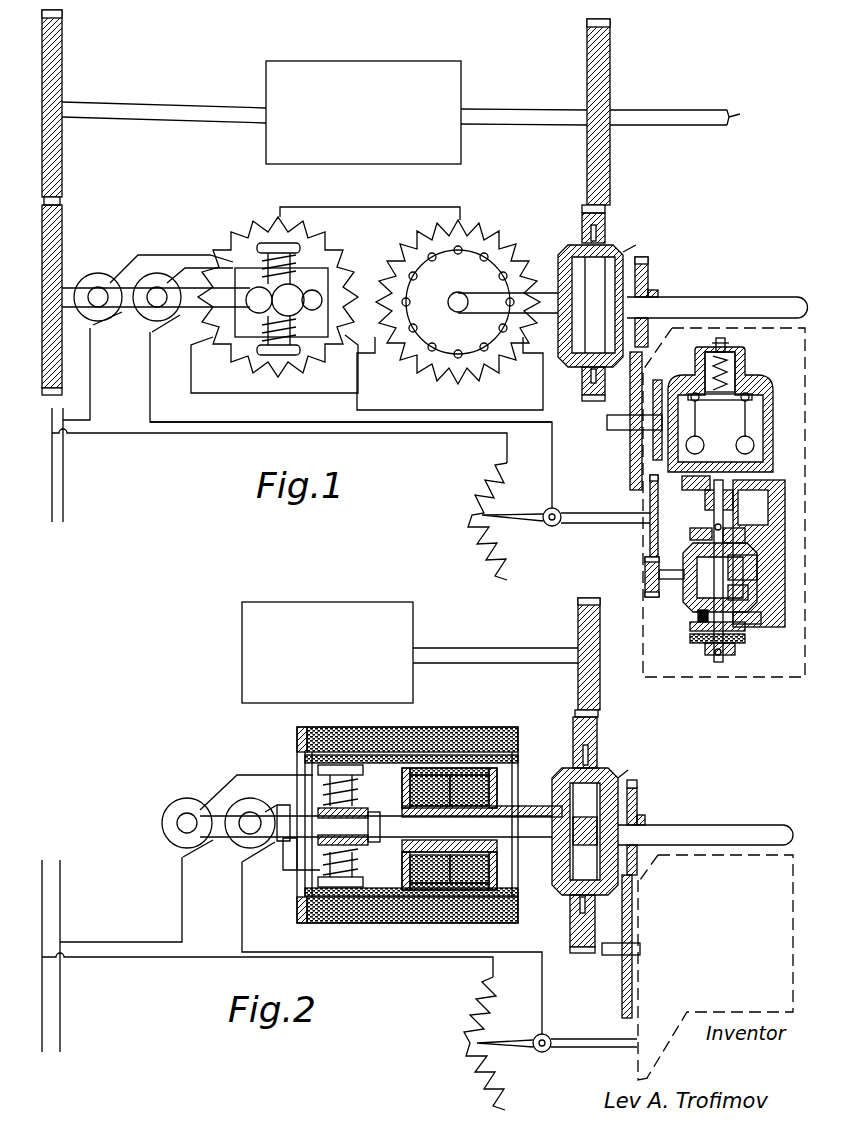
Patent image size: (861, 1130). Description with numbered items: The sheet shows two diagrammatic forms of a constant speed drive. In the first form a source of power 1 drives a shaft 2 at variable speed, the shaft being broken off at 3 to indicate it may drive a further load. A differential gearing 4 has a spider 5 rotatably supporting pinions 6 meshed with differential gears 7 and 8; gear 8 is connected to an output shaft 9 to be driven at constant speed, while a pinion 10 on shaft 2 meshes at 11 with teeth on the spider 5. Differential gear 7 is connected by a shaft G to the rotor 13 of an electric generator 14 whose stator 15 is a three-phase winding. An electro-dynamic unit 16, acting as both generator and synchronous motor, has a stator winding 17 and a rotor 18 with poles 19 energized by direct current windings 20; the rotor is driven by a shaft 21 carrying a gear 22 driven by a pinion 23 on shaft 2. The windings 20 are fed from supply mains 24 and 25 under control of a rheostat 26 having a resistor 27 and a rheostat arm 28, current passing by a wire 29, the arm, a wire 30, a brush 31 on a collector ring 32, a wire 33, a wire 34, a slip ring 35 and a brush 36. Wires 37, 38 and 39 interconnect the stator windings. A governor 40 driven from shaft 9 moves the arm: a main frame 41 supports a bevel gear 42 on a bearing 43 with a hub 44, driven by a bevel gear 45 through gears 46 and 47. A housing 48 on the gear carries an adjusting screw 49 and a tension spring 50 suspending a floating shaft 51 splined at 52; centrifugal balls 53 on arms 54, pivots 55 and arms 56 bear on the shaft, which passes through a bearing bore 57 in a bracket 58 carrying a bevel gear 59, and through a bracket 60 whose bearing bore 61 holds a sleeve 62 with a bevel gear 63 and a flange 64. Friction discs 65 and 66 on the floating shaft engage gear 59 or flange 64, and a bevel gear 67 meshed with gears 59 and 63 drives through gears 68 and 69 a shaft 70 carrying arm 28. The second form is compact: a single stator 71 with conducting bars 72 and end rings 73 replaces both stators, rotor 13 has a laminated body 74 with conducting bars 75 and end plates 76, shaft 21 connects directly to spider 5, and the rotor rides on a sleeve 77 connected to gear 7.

In FIG. 1, the source of power 1 is at (383, 61).
In FIG. 2, the source of power 1 is at (285, 602).
In FIG. 1, the shaft 2 is at (172, 104).
In FIG. 2, the shaft 2 is at (498, 655).
In FIG. 1, the broken-off shaft end 3 is at (741, 109).
In FIG. 1, the differential gearing 4 is at (643, 230).
In FIG. 1, the spider 5 is at (605, 220).
In FIG. 2, the spider 5 is at (597, 725).
In FIG. 1, the pinions 6 is at (595, 305).
In FIG. 2, the pinions 6 is at (597, 813).
In FIG. 1, the differential gear 7 is at (558, 262).
In FIG. 2, the differential gear 7 is at (553, 775).
In FIG. 1, the differential gear 8 is at (635, 243).
In FIG. 2, the differential gear 8 is at (629, 767).
In FIG. 1, the output shaft 9 is at (714, 297).
In FIG. 2, the output shaft 9 is at (712, 825).
In FIG. 1, the pinion 10 is at (610, 163).
In FIG. 2, the pinion 10 is at (600, 676).
In FIG. 1, the mesh 11 is at (582, 210).
In FIG. 1, the rotor 13 is at (500, 282).
In FIG. 2, the rotor 13 is at (497, 795).
In FIG. 1, the electric generator 14 is at (498, 236).
In FIG. 1, the stator 15 is at (497, 364).
In FIG. 1, the electro-dynamic unit 16 is at (262, 216).
In FIG. 1, the stator winding 17 is at (326, 352).
In FIG. 1, the rotor 18 is at (297, 300).
In FIG. 2, the rotor 18 is at (322, 812).
In FIG. 1, the poles 19 is at (294, 247).
In FIG. 2, the poles 19 is at (363, 769).
In FIG. 1, the direct current windings 20 is at (263, 268).
In FIG. 2, the direct current windings 20 is at (358, 789).
In FIG. 1, the shaft 21 is at (194, 310).
In FIG. 2, the shaft 21 is at (535, 845).
In FIG. 1, the gear 22 is at (62, 242).
In FIG. 1, the pinion 23 is at (62, 162).
In FIG. 1, the direct current supply main 24 is at (52, 462).
In FIG. 2, the direct current supply main 24 is at (42, 990).
In FIG. 1, the direct current supply main 25 is at (63, 472).
In FIG. 2, the direct current supply main 25 is at (60, 990).
In FIG. 1, the rheostat 26 is at (444, 526).
In FIG. 2, the rheostat 26 is at (458, 1054).
In FIG. 1, the resistor 27 is at (470, 500).
In FIG. 2, the resistor 27 is at (468, 1017).
In FIG. 1, the rheostat arm 28 is at (517, 521).
In FIG. 2, the rheostat arm 28 is at (510, 1040).
In FIG. 1, the wire 29 is at (202, 433).
In FIG. 1, the wire 30 is at (205, 422).
In FIG. 1, the brush 31 is at (165, 326).
In FIG. 2, the brush 31 is at (256, 858).
In FIG. 1, the collector ring 32 is at (142, 316).
In FIG. 2, the collector ring 32 is at (238, 840).
In FIG. 1, the wire 33 is at (305, 322).
In FIG. 1, the wire 34 is at (178, 255).
In FIG. 2, the wire 34 is at (260, 822).
In FIG. 1, the slip ring 35 is at (82, 315).
In FIG. 2, the slip ring 35 is at (168, 843).
In FIG. 1, the brush 36 is at (100, 330).
In FIG. 2, the brush 36 is at (188, 863).
In FIG. 1, the wire 37 is at (350, 207).
In FIG. 1, the wire 38 is at (270, 393).
In FIG. 1, the wire 39 is at (412, 410).
In FIG. 1, the governor 40 is at (734, 677).
In FIG. 2, the governor 40 is at (638, 1063).
In FIG. 1, the main frame 41 is at (759, 553).
In FIG. 1, the bevel gear 42 is at (773, 478).
In FIG. 1, the bearing 43 is at (685, 485).
In FIG. 1, the hub 44 is at (705, 497).
In FIG. 1, the bevel gear 45 is at (657, 380).
In FIG. 1, the gear 46 is at (630, 448).
In FIG. 2, the gear 46 is at (622, 971).
In FIG. 1, the gear 47 is at (648, 278).
In FIG. 2, the gear 47 is at (637, 798).
In FIG. 1, the housing 48 is at (773, 428).
In FIG. 1, the adjusting screw 49 is at (726, 340).
In FIG. 1, the tension spring 50 is at (735, 365).
In FIG. 1, the floating shaft 51 is at (720, 419).
In FIG. 1, the spline connection 52 is at (714, 510).
In FIG. 1, the centrifugal balls 53 is at (754, 448).
In FIG. 1, the arms 54 is at (752, 397).
In FIG. 1, the pivots 55 is at (749, 397).
In FIG. 1, the arms 56 is at (745, 380).
In FIG. 1, the bearing bore 57 is at (738, 587).
In FIG. 1, the bracket 58 is at (747, 565).
In FIG. 1, the bevel gear 59 is at (745, 536).
In FIG. 1, the bracket 60 is at (758, 628).
In FIG. 1, the bearing bore 61 is at (745, 635).
In FIG. 1, the sleeve 62 is at (698, 618).
In FIG. 1, the bevel gear 63 is at (740, 604).
In FIG. 1, the flange 64 is at (690, 630).
In FIG. 1, the friction disc 65 is at (690, 533).
In FIG. 1, the friction disc 66 is at (690, 642).
In FIG. 1, the bevel gear 67 is at (685, 600).
In FIG. 1, the gear 68 is at (645, 578).
In FIG. 1, the gear 69 is at (650, 540).
In FIG. 1, the shaft 70 is at (594, 523).
In FIG. 2, the shaft 70 is at (582, 1039).
In FIG. 2, the stator 71 is at (462, 727).
In FIG. 2, the conducting bars 72 is at (490, 727).
In FIG. 2, the end rings 73 is at (297, 741).
In FIG. 2, the laminated body 74 is at (430, 829).
In FIG. 2, the conducting bars 75 is at (469, 829).
In FIG. 2, the end plates 76 is at (497, 780).
In FIG. 2, the sleeve 77 is at (532, 816).
In FIG. 1, the shaft G is at (548, 318).